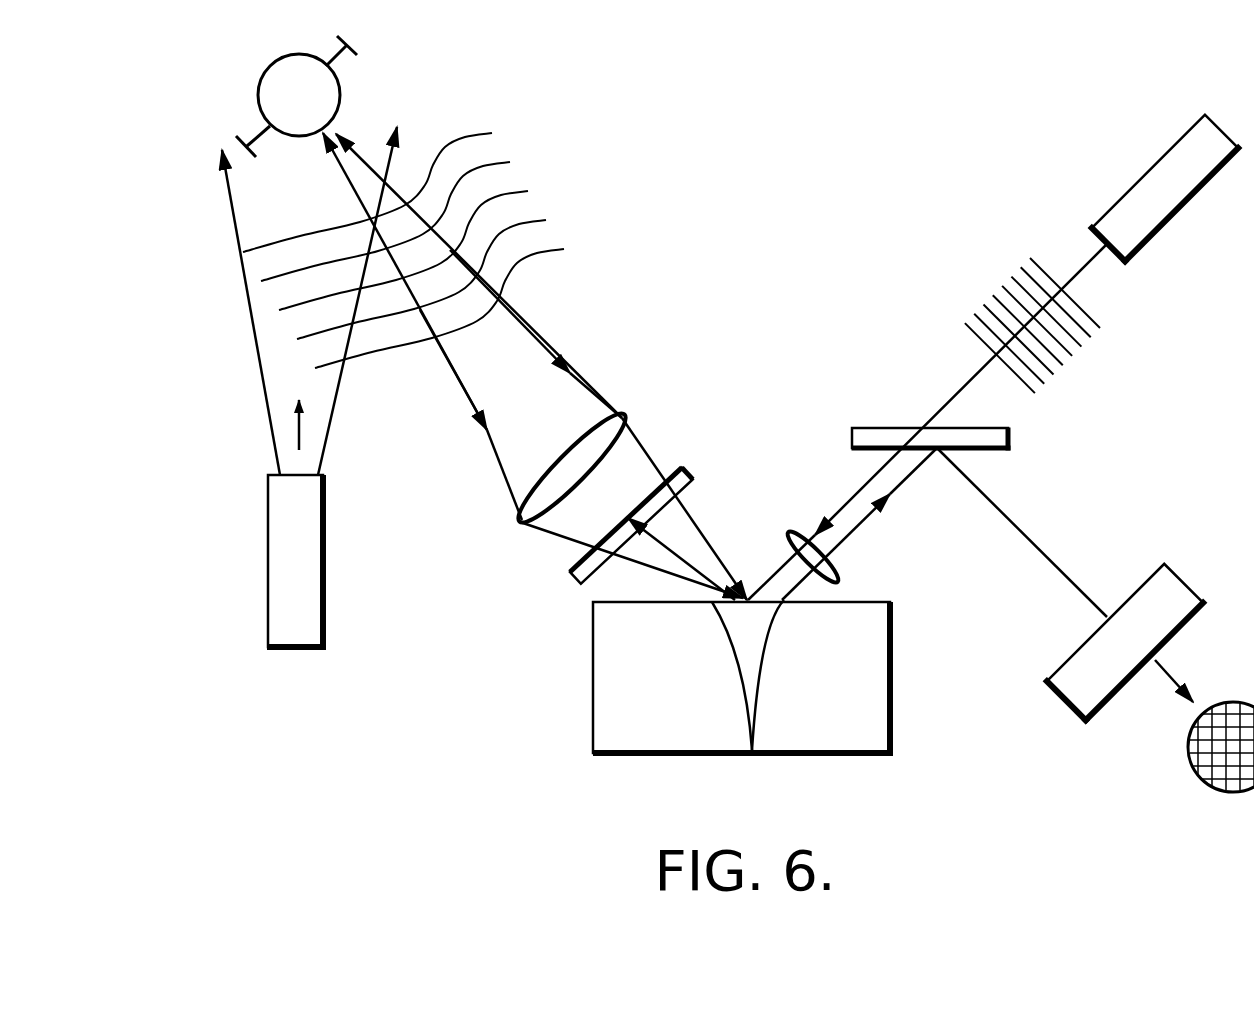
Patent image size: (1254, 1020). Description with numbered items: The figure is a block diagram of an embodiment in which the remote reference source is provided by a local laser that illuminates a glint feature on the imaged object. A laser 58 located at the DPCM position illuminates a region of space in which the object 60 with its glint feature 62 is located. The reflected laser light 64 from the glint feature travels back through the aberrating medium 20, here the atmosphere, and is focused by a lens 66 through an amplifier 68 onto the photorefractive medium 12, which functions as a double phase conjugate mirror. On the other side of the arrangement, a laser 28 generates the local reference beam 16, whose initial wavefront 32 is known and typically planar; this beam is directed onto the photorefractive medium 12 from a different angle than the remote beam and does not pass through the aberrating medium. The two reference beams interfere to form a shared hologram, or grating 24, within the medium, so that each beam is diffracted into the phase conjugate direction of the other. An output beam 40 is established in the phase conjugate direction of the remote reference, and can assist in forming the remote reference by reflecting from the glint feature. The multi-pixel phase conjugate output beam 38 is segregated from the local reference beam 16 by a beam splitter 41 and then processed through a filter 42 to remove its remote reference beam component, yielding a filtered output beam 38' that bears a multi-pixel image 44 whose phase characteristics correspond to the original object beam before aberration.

The photorefractive medium 12 is at (593, 700).
The local reference beam 16 is at (952, 390).
The aberrating medium 20 is at (578, 226).
The shared hologram (grating) 24 is at (774, 630).
The laser 28 is at (1093, 226).
The initial wavefront 32 is at (1003, 289).
The output beam 38 is at (944, 532).
The filtered output beam 38' is at (1203, 654).
The output beam 40 is at (657, 540).
The beam splitter 41 is at (1007, 449).
The filter 42 is at (1166, 563).
The multi-pixel image 44 is at (1200, 772).
The laser 58 is at (268, 563).
The object 60 is at (265, 74).
The glint feature 62 is at (318, 134).
The reflected laser light 64 is at (518, 318).
The lens 66 is at (624, 415).
The amplifier 68 is at (690, 473).